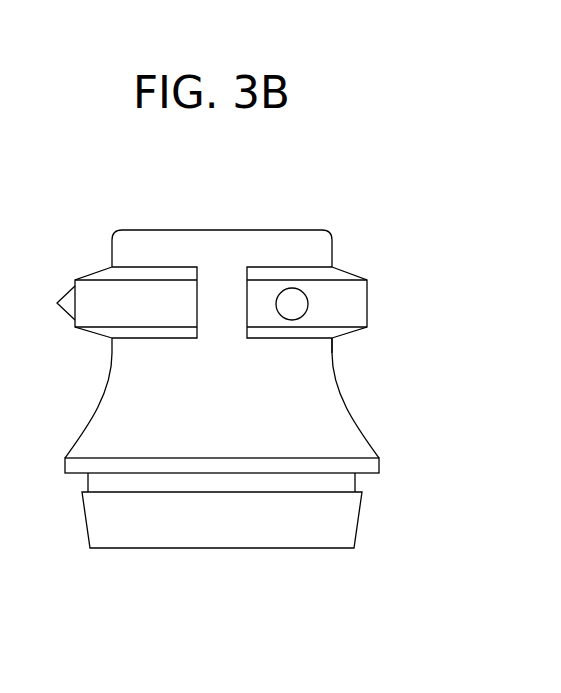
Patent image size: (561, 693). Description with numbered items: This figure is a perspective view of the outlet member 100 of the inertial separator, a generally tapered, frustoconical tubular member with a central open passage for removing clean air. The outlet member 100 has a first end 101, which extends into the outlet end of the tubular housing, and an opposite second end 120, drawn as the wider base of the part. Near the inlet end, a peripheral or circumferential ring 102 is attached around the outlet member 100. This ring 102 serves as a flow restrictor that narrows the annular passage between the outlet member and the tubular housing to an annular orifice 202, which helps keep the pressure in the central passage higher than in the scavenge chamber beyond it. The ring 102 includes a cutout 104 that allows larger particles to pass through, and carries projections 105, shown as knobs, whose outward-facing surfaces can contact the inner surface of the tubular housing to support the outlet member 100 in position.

The outlet member 100 is at (233, 407).
The first end 101 is at (122, 230).
The peripheral ring 102 is at (352, 303).
The cutout 104 is at (222, 307).
The projections 105 is at (288, 297).
The second end 120 is at (302, 550).
The annular orifice 202 is at (392, 322).